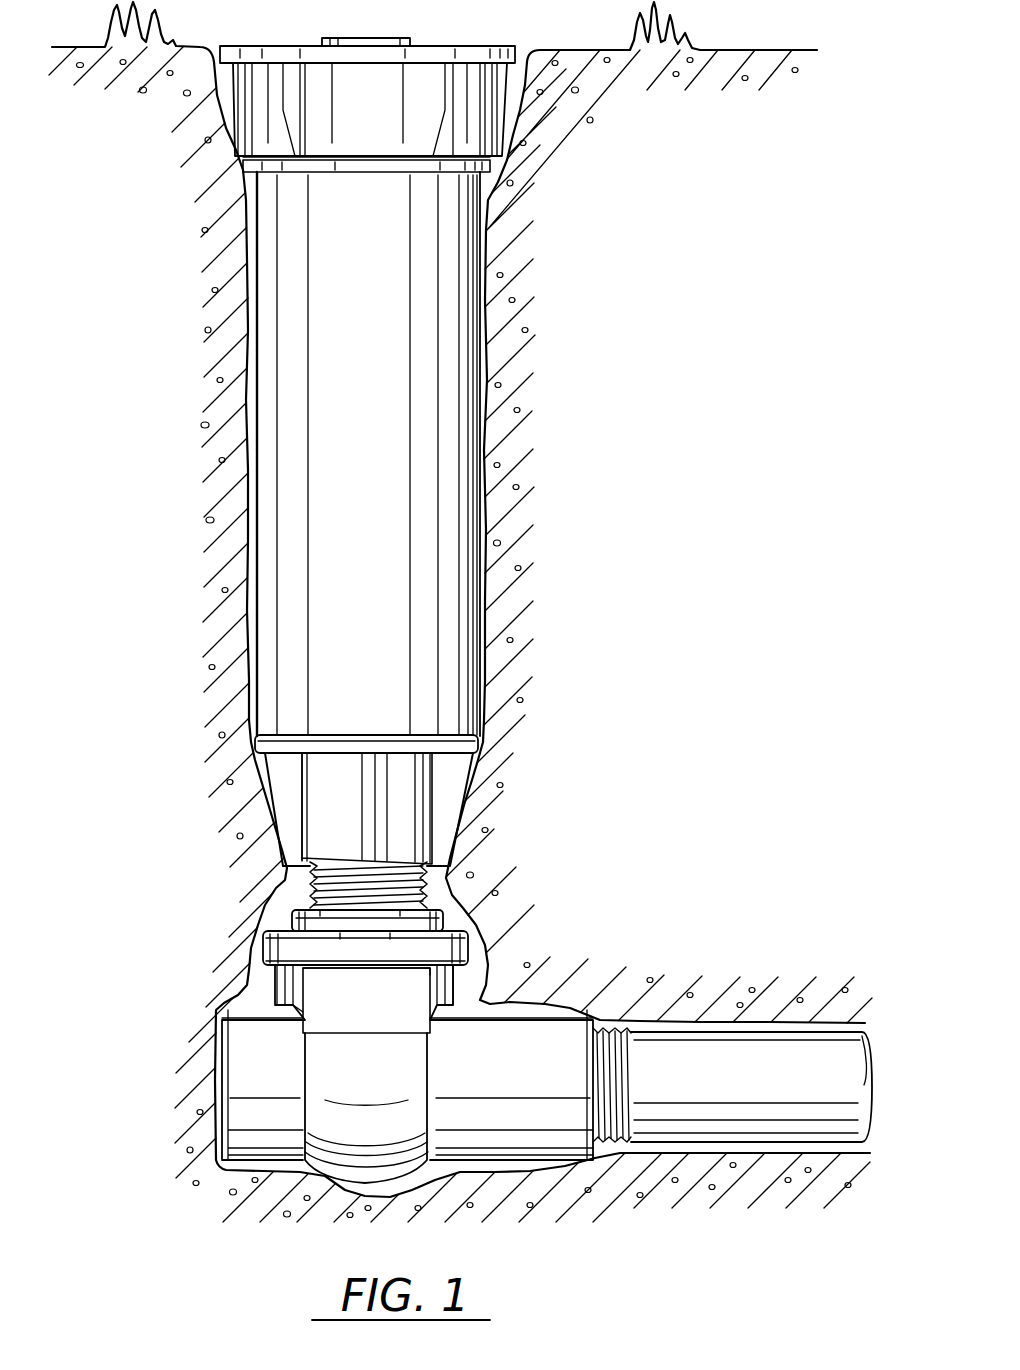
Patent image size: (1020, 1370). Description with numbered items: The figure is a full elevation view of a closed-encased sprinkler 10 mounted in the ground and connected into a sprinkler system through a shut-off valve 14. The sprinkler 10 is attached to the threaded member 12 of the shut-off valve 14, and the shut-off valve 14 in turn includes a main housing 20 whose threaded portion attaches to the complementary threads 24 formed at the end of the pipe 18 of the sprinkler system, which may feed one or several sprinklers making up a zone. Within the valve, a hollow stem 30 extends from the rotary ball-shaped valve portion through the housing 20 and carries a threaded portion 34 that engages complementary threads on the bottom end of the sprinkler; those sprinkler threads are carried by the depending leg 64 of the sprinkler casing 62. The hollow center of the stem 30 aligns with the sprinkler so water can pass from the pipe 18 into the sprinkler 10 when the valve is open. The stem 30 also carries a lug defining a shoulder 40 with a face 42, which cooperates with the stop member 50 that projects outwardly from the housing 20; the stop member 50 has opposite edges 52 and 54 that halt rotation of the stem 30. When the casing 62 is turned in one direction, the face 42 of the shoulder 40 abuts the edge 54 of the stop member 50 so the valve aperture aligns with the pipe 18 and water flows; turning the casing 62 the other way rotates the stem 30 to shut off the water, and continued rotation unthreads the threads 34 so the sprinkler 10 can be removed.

The closed-encased sprinkler 10 is at (436, 395).
The sprinkler casing 62 is at (380, 531).
The depending leg 64 is at (430, 803).
The threaded member 12 is at (447, 878).
The threaded portion 34 is at (307, 881).
The hollow stem 30 is at (294, 919).
The shoulder 40 is at (458, 927).
The face 42 is at (432, 970).
The shut-off valve 14 is at (442, 1044).
The stop member 50 is at (370, 1016).
The edge 52 is at (312, 1014).
The edge 54 is at (430, 972).
The main housing 20 is at (478, 1094).
The complementary threads 24 is at (622, 1040).
The pipe 18 is at (866, 1113).